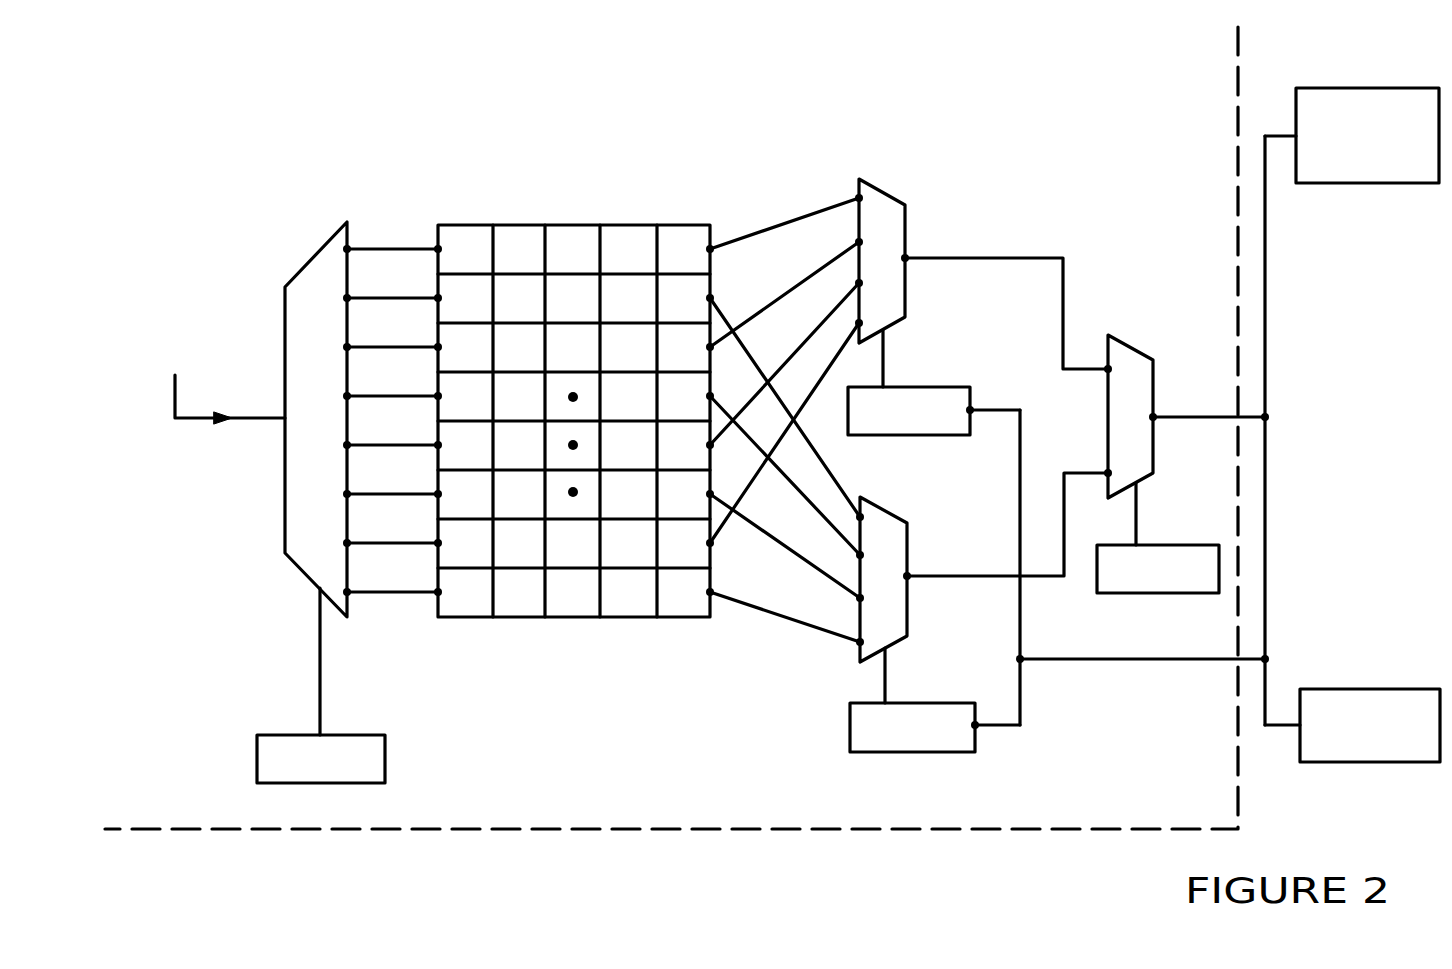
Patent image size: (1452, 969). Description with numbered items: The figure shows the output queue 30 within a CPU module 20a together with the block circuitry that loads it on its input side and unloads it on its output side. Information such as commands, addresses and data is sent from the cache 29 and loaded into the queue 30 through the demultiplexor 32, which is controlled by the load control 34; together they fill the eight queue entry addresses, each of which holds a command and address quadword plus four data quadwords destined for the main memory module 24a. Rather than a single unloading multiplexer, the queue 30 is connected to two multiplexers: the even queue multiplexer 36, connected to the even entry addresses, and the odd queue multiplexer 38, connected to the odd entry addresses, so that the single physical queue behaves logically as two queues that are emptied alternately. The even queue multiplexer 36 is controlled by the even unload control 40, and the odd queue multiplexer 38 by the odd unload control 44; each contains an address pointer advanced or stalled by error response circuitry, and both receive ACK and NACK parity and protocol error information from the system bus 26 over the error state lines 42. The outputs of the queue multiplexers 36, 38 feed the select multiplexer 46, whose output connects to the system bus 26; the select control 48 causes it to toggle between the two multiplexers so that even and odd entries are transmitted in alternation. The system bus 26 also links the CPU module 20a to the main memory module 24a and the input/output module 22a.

The CPU module 20a is at (813, 69).
The cache 29 is at (195, 370).
The demultiplexor 32 is at (313, 272).
The output queue 30 is at (595, 201).
The load control 34 is at (375, 769).
The even queue multiplexer 36 is at (882, 205).
The odd queue multiplexer 38 is at (884, 528).
The even unload control 40 is at (931, 401).
The odd unload control 44 is at (934, 716).
The error state lines 42 is at (1112, 661).
The select multiplexer 46 is at (1132, 358).
The select control 48 is at (1181, 556).
The system bus 26 is at (1266, 323).
The main memory module 24a is at (1400, 98).
The input/output module 22a is at (1316, 700).